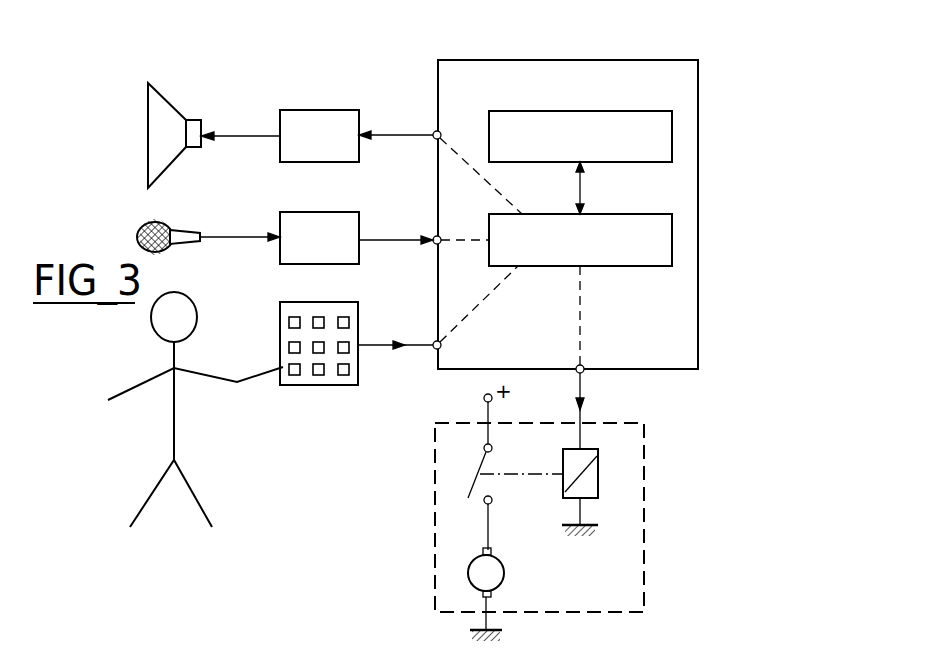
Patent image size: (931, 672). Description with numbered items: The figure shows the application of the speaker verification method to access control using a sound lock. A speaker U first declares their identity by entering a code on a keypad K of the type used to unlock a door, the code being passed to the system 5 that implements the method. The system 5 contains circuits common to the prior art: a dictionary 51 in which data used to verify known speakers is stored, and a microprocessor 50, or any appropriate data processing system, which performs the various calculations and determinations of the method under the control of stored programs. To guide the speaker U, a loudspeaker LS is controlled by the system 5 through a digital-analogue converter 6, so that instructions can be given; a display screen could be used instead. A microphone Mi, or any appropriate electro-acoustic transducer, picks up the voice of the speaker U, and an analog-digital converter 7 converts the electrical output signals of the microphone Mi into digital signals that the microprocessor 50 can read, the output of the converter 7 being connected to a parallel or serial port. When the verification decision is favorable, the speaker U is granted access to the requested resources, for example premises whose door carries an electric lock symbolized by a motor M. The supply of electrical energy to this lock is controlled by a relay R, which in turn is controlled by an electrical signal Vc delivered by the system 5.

The system 5 is at (600, 60).
The digital-analogue converter 6 is at (320, 110).
The analog-digital converter 7 is at (320, 212).
The microprocessor 50 is at (672, 246).
The dictionary 51 is at (672, 135).
The loudspeaker LS is at (172, 107).
The microphone Mi is at (188, 226).
The speaker U is at (188, 346).
The keypad K is at (320, 385).
The electrical signal Vc is at (583, 382).
The relay R is at (598, 474).
The motor M is at (468, 570).